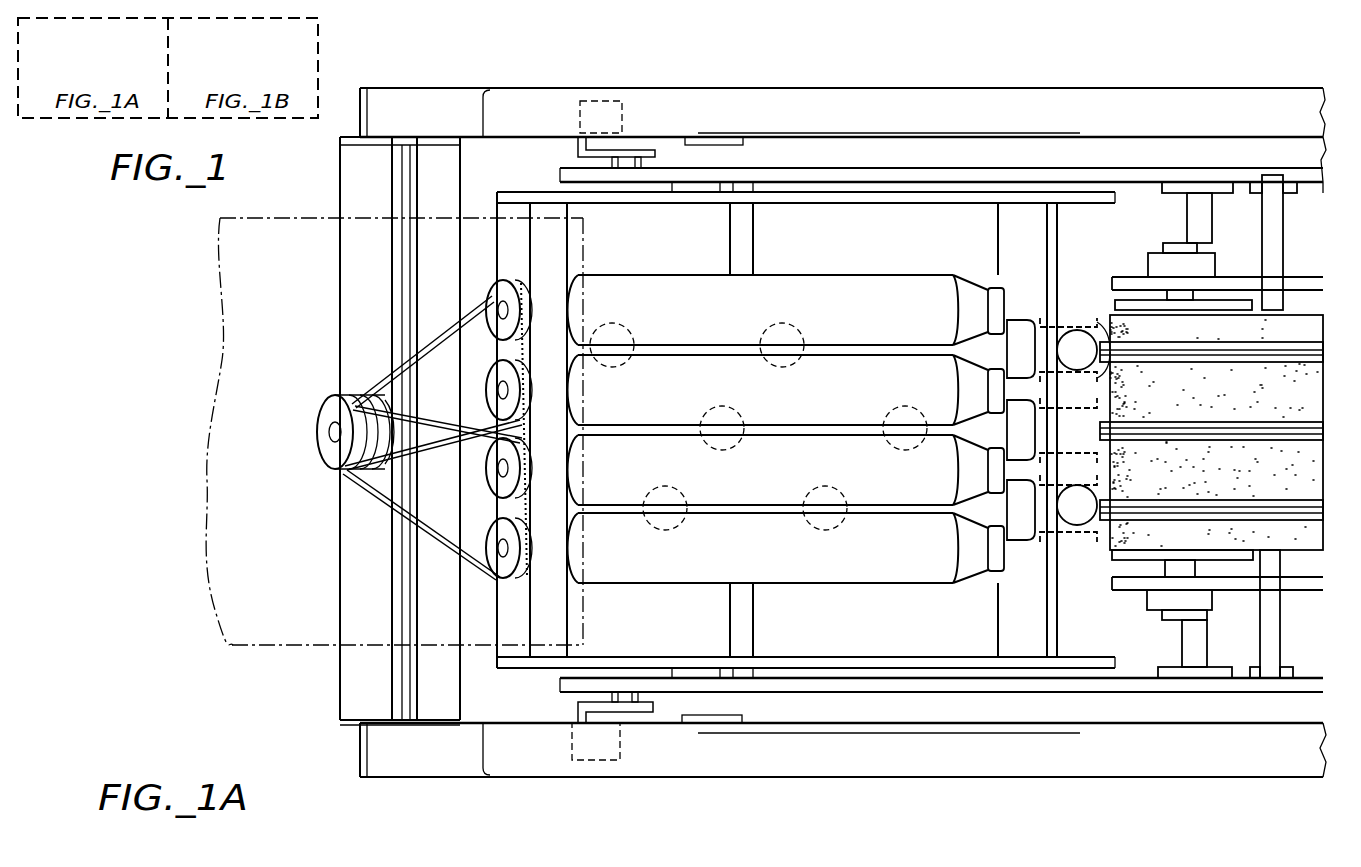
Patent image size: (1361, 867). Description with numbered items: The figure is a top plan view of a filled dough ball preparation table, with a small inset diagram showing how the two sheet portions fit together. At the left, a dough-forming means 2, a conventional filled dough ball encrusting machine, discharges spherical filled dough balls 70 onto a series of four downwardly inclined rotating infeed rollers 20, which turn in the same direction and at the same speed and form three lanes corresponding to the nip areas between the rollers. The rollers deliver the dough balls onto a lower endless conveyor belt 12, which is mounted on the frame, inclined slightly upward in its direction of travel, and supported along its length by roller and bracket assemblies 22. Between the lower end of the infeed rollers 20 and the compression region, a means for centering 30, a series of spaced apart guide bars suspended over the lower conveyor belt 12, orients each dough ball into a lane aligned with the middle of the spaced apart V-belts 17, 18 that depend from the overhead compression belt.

The dough-forming means 2 is at (310, 648).
The lower endless conveyor belt 12 is at (1130, 648).
The V-belt 17 is at (1253, 508).
The V-belt 18 is at (1264, 432).
The infeed rollers 20 is at (885, 540).
The roller and bracket assembly 22 is at (1273, 180).
The means for centering 30 is at (1107, 416).
The dough balls 70 is at (1118, 481).